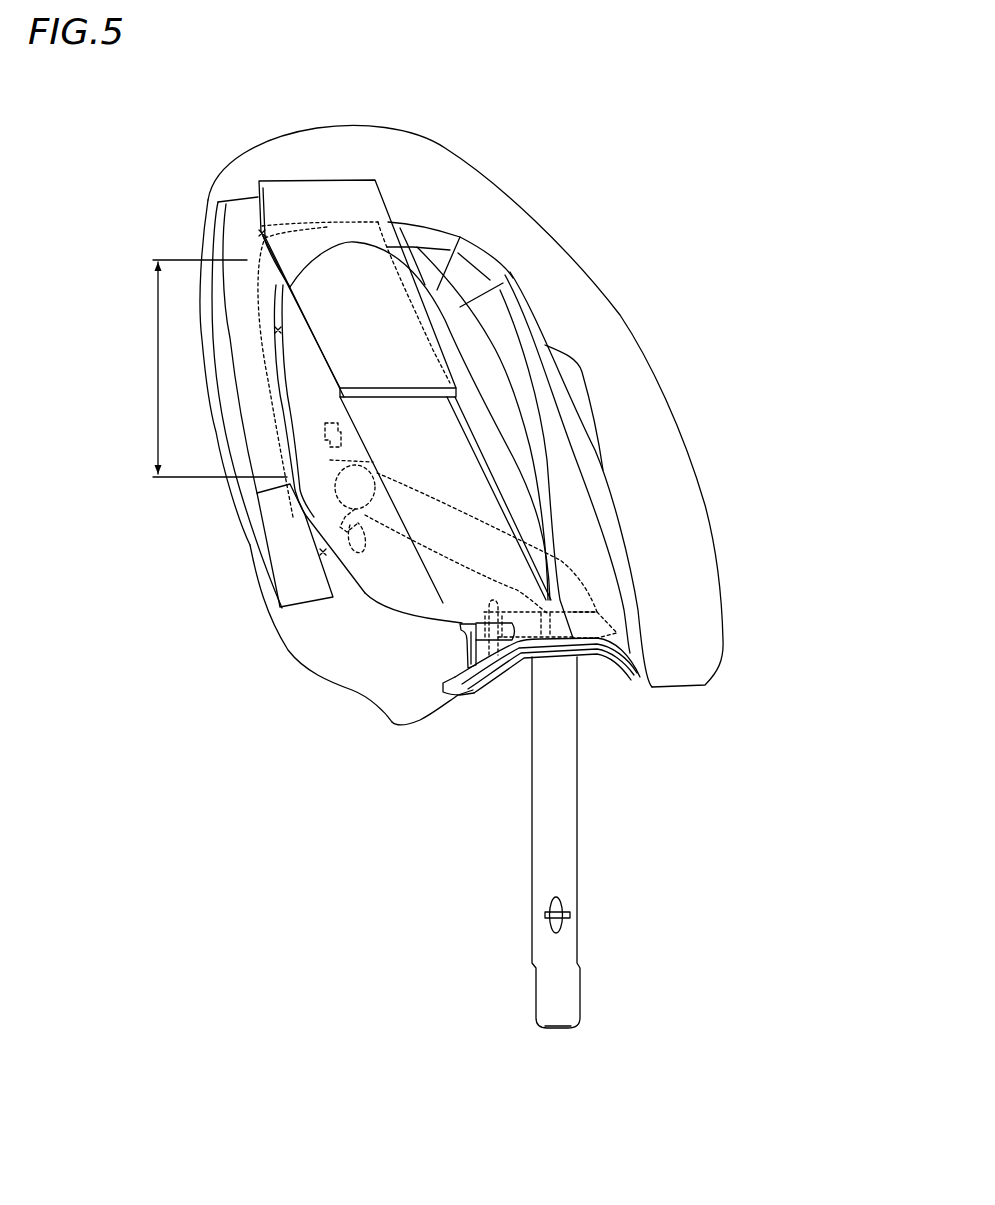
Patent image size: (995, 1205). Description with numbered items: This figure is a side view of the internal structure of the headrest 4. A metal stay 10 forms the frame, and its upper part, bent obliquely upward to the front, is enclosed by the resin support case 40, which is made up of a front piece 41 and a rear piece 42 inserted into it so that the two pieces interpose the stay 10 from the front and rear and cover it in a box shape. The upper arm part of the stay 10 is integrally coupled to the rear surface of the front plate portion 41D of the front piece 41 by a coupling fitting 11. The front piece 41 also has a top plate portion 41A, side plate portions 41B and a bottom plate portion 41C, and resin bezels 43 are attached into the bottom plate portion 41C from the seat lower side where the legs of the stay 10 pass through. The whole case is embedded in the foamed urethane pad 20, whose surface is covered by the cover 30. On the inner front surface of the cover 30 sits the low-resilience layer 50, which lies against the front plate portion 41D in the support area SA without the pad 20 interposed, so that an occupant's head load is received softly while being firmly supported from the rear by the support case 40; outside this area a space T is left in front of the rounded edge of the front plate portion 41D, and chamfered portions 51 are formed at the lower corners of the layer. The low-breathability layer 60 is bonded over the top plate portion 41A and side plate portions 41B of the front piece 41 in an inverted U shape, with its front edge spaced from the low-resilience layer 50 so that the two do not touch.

The headrest 4 is at (568, 190).
The stay 10 is at (532, 829).
The coupling fitting 11 is at (325, 433).
The pad 20 is at (468, 187).
The cover 30 is at (440, 147).
The support case 40 is at (503, 263).
The front piece 41 is at (382, 592).
The top plate portion 41A is at (303, 223).
The side plate portions 41B is at (358, 573).
The bottom plate portion 41C is at (432, 623).
The front plate portion 41D is at (275, 373).
The rear piece 42 is at (523, 337).
The bezel 43 is at (500, 675).
The low-resilience layer 50 is at (237, 293).
The chamfered portions 51 is at (282, 517).
The low-breathability layer 60 is at (277, 178).
The support area SA is at (155, 378).
The space T is at (262, 233).